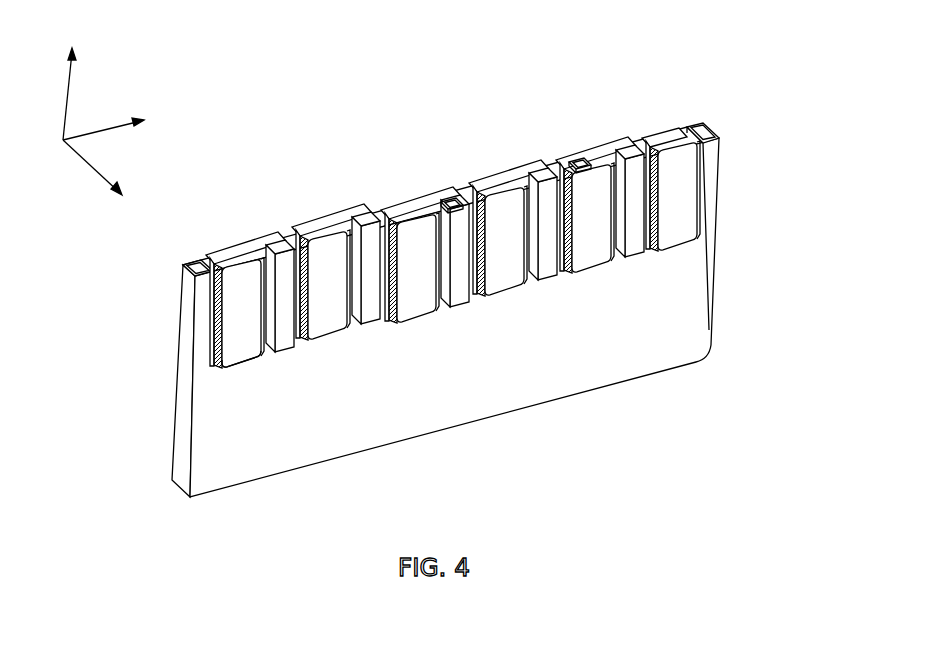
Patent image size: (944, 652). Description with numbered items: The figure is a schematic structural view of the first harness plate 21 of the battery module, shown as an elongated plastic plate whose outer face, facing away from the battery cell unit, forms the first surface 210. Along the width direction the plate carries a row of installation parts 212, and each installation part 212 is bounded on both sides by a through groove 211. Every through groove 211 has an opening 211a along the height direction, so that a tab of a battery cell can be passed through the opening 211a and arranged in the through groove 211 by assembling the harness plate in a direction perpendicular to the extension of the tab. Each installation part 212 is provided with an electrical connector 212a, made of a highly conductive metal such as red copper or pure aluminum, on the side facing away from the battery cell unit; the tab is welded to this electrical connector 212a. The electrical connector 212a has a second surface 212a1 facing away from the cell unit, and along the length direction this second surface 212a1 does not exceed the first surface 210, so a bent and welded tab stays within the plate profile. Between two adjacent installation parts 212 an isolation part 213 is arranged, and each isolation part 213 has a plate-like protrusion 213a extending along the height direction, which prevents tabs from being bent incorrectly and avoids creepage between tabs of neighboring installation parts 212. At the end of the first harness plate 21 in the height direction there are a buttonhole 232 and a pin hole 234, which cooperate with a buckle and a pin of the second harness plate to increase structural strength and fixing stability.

The first harness plate 21 is at (440, 50).
The first surface 210 is at (213, 455).
The through groove 211 is at (433, 300).
The opening 211a is at (466, 196).
The installation part 212 is at (314, 236).
The electrical connector 212a is at (777, 196).
The second surface 212a1 is at (228, 360).
The isolation part 213 is at (352, 323).
The protrusion 213a is at (552, 288).
The buttonhole 232 is at (578, 156).
The pin hole 234 is at (700, 123).